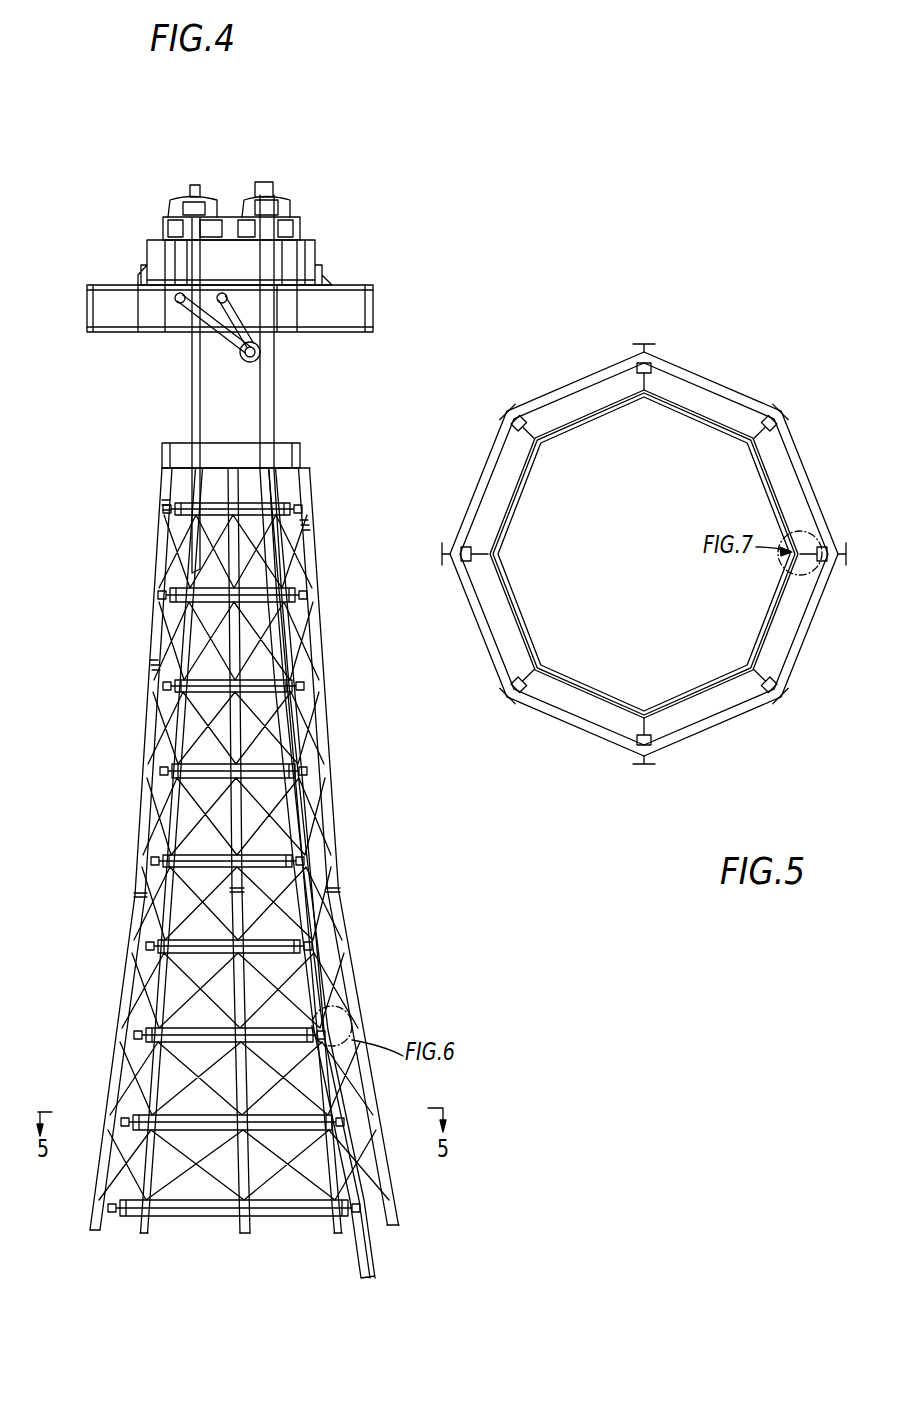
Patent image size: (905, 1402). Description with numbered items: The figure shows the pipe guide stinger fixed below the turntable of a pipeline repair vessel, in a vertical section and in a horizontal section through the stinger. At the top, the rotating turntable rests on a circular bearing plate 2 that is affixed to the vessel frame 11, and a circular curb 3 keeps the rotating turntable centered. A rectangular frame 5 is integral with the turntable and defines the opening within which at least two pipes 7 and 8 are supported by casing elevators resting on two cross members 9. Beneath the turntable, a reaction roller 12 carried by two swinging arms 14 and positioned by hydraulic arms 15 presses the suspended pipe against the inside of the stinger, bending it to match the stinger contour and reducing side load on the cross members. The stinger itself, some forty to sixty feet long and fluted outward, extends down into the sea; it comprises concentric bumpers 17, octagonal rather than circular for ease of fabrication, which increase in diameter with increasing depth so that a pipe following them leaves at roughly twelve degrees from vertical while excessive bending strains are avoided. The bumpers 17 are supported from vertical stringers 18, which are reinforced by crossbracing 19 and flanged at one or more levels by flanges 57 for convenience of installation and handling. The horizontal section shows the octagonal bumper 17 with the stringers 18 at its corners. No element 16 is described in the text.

In FIG. 4, the circular bearing plate 2 is at (310, 290).
In FIG. 4, the circular curb 3 is at (322, 272).
In FIG. 4, the rectangular frame 5 is at (314, 245).
In FIG. 4, the pipe 7 is at (276, 412).
In FIG. 4, the pipe 8 is at (190, 411).
In FIG. 4, the cross members 9 is at (167, 222).
In FIG. 4, the vessel frame 11 is at (164, 310).
In FIG. 4, the reaction roller 12 is at (250, 362).
In FIG. 4, the swinging arms 14 is at (246, 298).
In FIG. 4, the hydraulic arms 15 is at (207, 325).
In FIG. 4, the tower top platform 16 is at (292, 445).
In FIG. 4, the concentric circular bumpers 17 is at (250, 500).
In FIG. 5, the concentric circular bumpers 17 is at (788, 620).
In FIG. 4, the vertical stringers 18 is at (306, 522).
In FIG. 5, the vertical stringers 18 is at (850, 562).
In FIG. 4, the crossbracing 19 is at (232, 636).
In FIG. 5, the crossbracing 19 is at (806, 458).
In FIG. 4, the flanges 57 is at (134, 893).